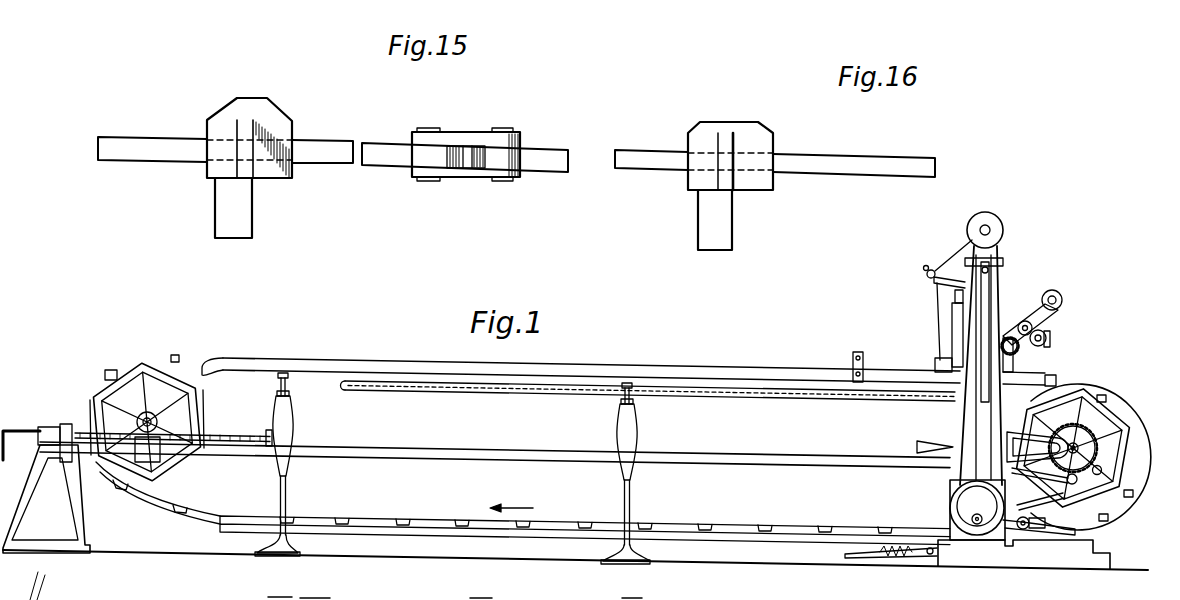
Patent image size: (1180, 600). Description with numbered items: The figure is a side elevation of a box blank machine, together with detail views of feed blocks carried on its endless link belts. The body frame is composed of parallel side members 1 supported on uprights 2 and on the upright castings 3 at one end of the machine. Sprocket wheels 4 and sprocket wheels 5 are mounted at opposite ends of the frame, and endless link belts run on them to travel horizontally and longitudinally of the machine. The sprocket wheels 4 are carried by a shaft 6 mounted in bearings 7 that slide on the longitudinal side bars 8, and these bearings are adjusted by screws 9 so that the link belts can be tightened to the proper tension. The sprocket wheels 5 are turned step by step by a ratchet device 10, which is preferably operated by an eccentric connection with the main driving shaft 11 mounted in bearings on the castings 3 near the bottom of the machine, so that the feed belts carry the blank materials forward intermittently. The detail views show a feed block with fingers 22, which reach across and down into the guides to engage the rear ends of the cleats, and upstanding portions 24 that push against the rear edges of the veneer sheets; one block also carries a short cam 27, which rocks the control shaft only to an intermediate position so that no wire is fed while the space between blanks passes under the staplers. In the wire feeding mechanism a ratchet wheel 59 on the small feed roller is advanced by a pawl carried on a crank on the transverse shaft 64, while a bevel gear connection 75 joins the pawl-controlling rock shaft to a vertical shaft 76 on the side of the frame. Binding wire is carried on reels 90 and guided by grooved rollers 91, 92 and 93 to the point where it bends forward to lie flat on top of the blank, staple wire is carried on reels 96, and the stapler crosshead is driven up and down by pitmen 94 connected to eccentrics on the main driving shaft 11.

In FIG. 1, the side members 1 is at (658, 369).
In FIG. 1, the uprights 2 is at (288, 444).
In FIG. 1, the castings 3 is at (965, 456).
In FIG. 1, the sprocket wheels 4 is at (166, 420).
In FIG. 15, the sprocket wheels 5 is at (520, 173).
In FIG. 1, the sprocket wheels 5 is at (331, 516).
In FIG. 1, the shaft 6 is at (138, 421).
In FIG. 1, the bearings 7 is at (152, 448).
In FIG. 1, the longitudinal side bars 8 is at (428, 449).
In FIG. 1, the screws 9 is at (266, 443).
In FIG. 1, the ratchet device 10 is at (1118, 398).
In FIG. 1, the main driving shaft 11 is at (979, 523).
In FIG. 15, the fingers 22 is at (240, 225).
In FIG. 16, the fingers 22 is at (698, 240).
In FIG. 15, the upstanding portions 24 is at (242, 135).
In FIG. 16, the upstanding portions 24 is at (725, 147).
In FIG. 16, the cams 27 is at (727, 129).
In FIG. 1, the ratchet wheel 59 is at (952, 342).
In FIG. 1, the shaft 64 is at (1032, 328).
In FIG. 1, the bevel gear connection 75 is at (1046, 338).
In FIG. 1, the vertical shaft 76 is at (1018, 352).
In FIG. 1, the reels 90 is at (1003, 230).
In FIG. 1, the grooved roller 91 is at (929, 270).
In FIG. 1, the grooved roller 92 is at (935, 285).
In FIG. 1, the grooved roller 93 is at (936, 363).
In FIG. 1, the pitmen 94 is at (986, 313).
In FIG. 1, the reels 96 is at (1060, 304).